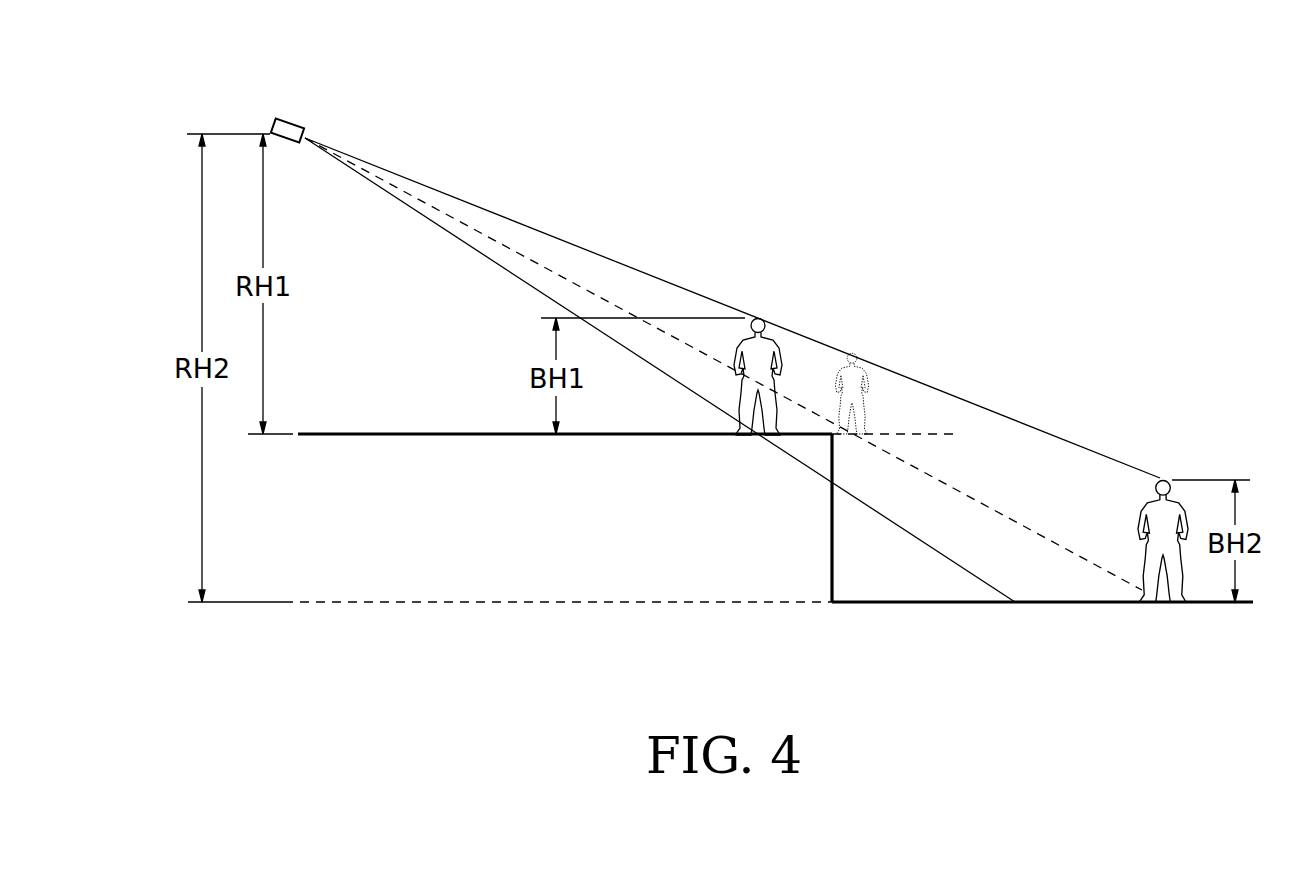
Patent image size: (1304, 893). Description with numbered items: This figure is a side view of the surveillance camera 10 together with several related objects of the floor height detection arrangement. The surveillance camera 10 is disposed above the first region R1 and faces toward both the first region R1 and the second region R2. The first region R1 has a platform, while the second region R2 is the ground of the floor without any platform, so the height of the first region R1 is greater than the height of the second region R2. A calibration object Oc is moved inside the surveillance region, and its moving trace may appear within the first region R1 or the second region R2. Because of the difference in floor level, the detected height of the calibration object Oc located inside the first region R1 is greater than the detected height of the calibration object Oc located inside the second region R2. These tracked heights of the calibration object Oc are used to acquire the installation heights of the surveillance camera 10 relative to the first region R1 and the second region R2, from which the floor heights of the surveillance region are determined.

The surveillance camera 10 is at (289, 116).
The calibration object Oc is at (767, 338).
The first region R1 is at (629, 518).
The second region R2 is at (1042, 625).